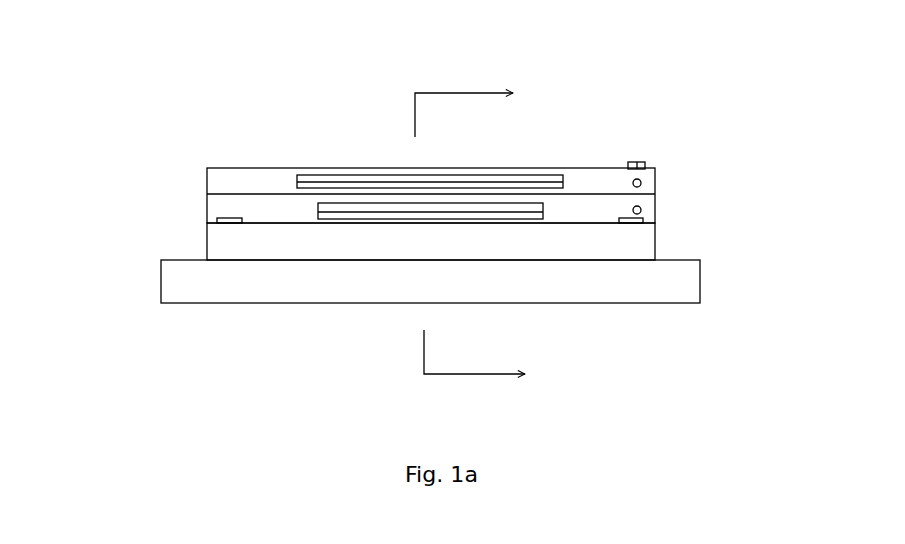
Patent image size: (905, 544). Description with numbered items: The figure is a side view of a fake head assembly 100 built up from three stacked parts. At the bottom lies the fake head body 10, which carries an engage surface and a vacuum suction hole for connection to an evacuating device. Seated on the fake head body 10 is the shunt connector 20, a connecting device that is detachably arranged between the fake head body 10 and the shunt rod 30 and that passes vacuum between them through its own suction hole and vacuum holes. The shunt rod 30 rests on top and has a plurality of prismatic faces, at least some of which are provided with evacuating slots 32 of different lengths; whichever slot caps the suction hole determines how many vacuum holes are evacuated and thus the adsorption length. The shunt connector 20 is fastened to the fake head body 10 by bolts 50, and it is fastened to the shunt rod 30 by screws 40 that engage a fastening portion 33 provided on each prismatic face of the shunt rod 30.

The fake head assembly 100 is at (132, 28).
The fake head body 10 is at (348, 292).
The shunt connector 20 is at (223, 247).
The shunt rod 30 is at (258, 172).
The evacuating slots 32 is at (335, 182).
The fastening portion of the shunt device 33 is at (641, 183).
The screws 40 is at (645, 164).
The bolts 50 is at (232, 218).